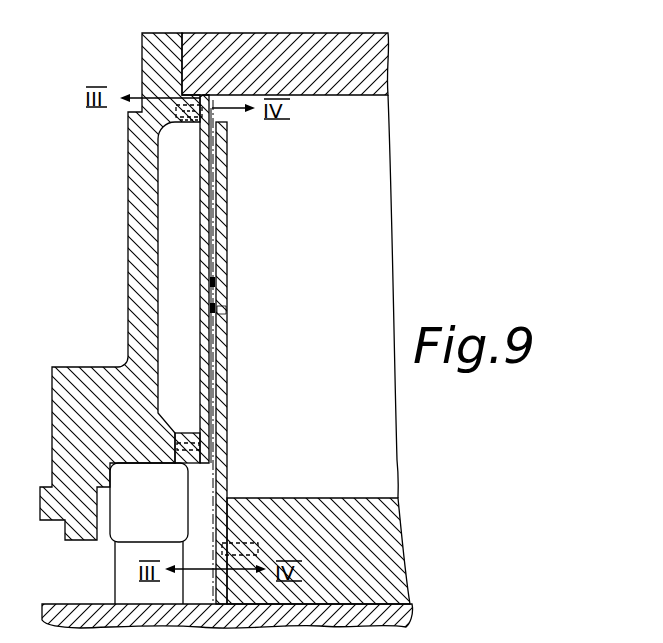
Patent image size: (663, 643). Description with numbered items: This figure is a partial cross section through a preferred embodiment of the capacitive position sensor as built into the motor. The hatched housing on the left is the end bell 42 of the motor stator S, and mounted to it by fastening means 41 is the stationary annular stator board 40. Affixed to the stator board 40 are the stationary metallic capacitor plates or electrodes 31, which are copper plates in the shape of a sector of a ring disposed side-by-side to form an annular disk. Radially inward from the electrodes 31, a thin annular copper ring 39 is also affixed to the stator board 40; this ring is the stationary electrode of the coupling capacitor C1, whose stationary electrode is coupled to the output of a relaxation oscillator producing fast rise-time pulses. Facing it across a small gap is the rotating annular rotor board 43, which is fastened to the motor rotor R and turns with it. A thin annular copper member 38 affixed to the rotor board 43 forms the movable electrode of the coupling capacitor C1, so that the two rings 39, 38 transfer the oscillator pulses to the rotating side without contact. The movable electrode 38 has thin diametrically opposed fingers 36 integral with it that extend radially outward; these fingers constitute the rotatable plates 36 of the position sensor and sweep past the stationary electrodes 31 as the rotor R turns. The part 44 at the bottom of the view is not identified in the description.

The stator / upper housing block S is at (331, 22).
The motor rotor R is at (364, 543).
The base plate 44 is at (227, 623).
The end bell 42 is at (128, 246).
The rotatable electrodes 36 is at (213, 188).
The stator board 40 is at (204, 95).
The fastening means 41 is at (187, 125).
The stationary electrodes 31 is at (212, 173).
The stationary electrode 39 is at (211, 282).
The movable electrode 38 is at (214, 308).
The rotor board 43 is at (222, 374).
The coupling capacitor C1 is at (226, 310).